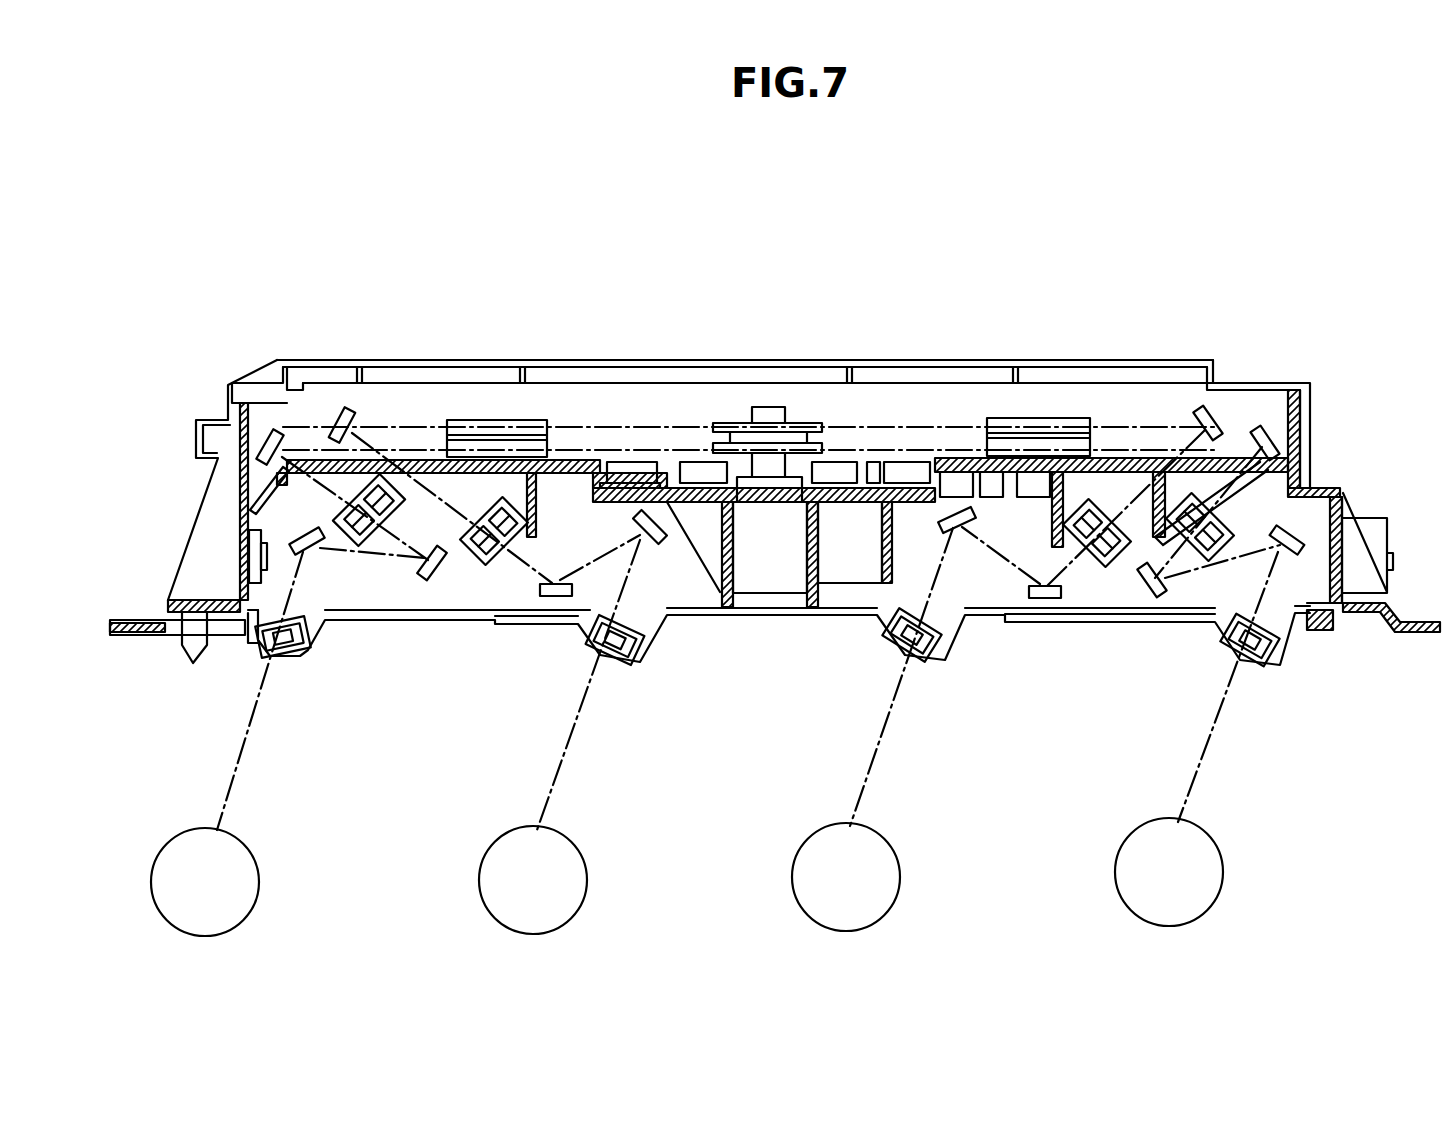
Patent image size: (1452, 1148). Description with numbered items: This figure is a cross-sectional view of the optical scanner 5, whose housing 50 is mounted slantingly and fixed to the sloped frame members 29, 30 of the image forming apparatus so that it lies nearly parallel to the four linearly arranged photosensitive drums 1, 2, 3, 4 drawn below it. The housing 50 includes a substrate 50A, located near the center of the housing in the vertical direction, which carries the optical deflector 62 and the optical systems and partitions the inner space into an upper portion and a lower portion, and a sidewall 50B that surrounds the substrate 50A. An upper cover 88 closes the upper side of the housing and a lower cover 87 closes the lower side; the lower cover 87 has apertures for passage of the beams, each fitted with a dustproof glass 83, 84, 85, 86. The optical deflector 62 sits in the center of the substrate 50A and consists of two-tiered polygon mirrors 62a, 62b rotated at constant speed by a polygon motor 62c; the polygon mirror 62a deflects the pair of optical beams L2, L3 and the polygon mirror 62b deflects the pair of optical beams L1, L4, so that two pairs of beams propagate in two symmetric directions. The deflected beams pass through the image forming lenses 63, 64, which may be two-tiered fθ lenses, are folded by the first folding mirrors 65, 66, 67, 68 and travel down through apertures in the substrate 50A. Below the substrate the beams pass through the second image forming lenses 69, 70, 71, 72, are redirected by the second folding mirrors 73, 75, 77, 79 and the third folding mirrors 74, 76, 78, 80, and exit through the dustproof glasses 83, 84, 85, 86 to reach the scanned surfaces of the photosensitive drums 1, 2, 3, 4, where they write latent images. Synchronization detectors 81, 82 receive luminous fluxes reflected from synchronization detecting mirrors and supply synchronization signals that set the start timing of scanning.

The photosensitive drum 1 is at (1220, 849).
The photosensitive drum 2 is at (897, 851).
The photosensitive drum 3 is at (585, 856).
The photosensitive drum 4 is at (256, 857).
The optical scanner 5 is at (1118, 308).
The sloped frame member 29 is at (150, 640).
The sloped frame member 30 is at (1405, 630).
The housing 50 is at (182, 546).
The substrate 50A is at (630, 497).
The sidewall 50B is at (1330, 484).
The optical deflector 62 is at (802, 414).
The polygon mirror 62a is at (730, 422).
The polygon mirror 62b is at (825, 442).
The polygon motor 62c is at (772, 580).
The image forming lens 63 is at (1040, 417).
The image forming lens 64 is at (500, 419).
The first folding mirror 65 is at (1203, 407).
The first folding mirror 66 is at (345, 408).
The first folding mirror 67 is at (1260, 427).
The first folding mirror 68 is at (273, 428).
The second image forming lens 69 is at (1222, 512).
The second image forming lens 70 is at (1115, 560).
The second image forming lens 71 is at (478, 555).
The second image forming lens 72 is at (333, 505).
The second folding mirror 73 is at (1158, 600).
The third folding mirror 74 is at (1297, 648).
The second folding mirror 75 is at (1042, 600).
The third folding mirror 76 is at (962, 510).
The second folding mirror 77 is at (556, 598).
The third folding mirror 78 is at (663, 541).
The second folding mirror 79 is at (425, 583).
The third folding mirror 80 is at (313, 533).
The synchronization detector 81 is at (1390, 535).
The synchronization detector 82 is at (262, 576).
The dustproof glass 83 is at (1238, 642).
The dustproof glass 84 is at (909, 642).
The dustproof glass 85 is at (610, 656).
The dustproof glass 86 is at (283, 650).
The lower cover 87 is at (1072, 626).
The upper cover 88 is at (750, 358).
The optical beam L1 is at (1226, 732).
The optical beam L2 is at (902, 733).
The optical beam L3 is at (585, 748).
The optical beam L4 is at (247, 757).